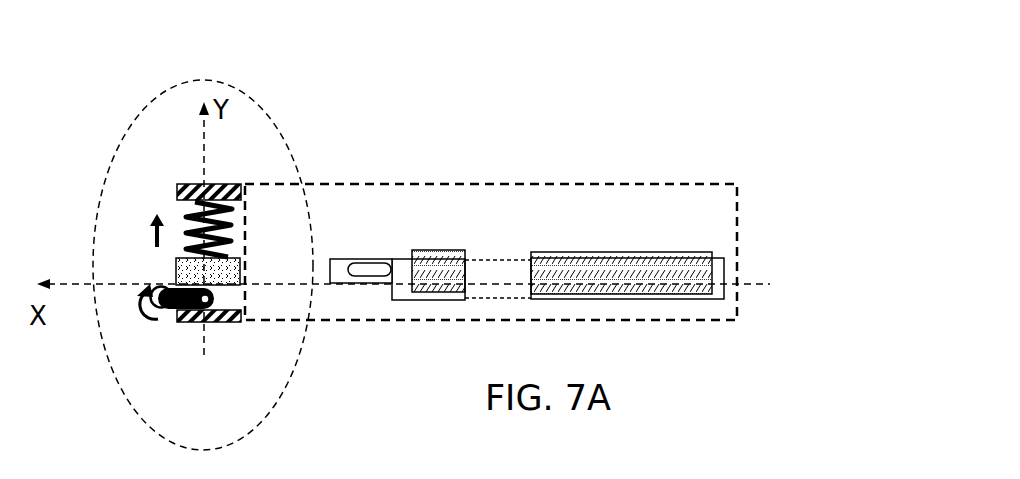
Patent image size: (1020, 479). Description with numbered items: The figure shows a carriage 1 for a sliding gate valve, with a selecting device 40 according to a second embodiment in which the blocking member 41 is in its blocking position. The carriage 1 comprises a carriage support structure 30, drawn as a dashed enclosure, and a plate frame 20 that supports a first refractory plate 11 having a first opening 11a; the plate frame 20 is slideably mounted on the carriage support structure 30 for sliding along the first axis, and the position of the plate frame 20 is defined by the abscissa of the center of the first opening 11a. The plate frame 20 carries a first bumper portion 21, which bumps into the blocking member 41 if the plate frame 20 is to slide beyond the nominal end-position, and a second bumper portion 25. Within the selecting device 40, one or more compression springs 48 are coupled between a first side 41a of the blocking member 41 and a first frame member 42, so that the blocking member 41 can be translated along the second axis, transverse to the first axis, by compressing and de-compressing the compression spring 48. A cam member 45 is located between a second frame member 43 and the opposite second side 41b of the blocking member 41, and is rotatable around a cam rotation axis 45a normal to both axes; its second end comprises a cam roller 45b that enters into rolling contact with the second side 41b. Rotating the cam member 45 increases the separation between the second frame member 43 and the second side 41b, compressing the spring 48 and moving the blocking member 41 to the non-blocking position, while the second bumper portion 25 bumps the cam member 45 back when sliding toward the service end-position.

The carriage 1 is at (368, 78).
The first refractory plate 11 is at (630, 262).
The first opening 11a is at (495, 272).
The plate frame 20 is at (697, 299).
The first bumper portion 21 is at (342, 267).
The second bumper portion 25 is at (370, 267).
The carriage support structure 30 is at (737, 207).
The selecting device 40 is at (122, 137).
The blocking member 41 is at (176, 276).
The first side of the blocking member 41a is at (233, 258).
The second side of the blocking member 41b is at (234, 288).
The first frame member 42 is at (192, 184).
The second frame member 43 is at (198, 322).
The cam member 45 is at (183, 322).
The cam rotation axis 45a is at (210, 322).
The cam roller 45b is at (154, 313).
The compression spring 48 is at (185, 215).